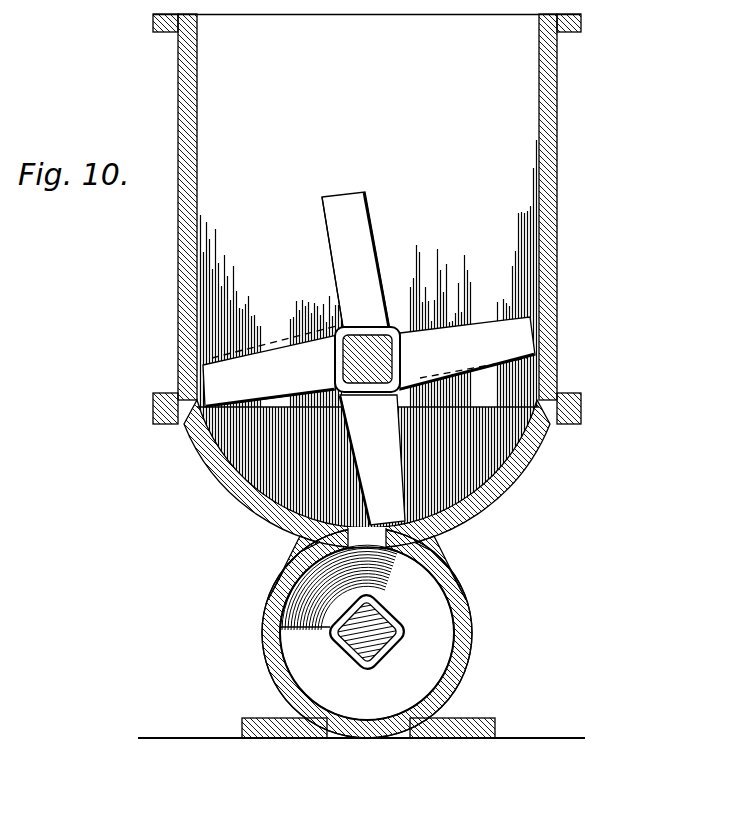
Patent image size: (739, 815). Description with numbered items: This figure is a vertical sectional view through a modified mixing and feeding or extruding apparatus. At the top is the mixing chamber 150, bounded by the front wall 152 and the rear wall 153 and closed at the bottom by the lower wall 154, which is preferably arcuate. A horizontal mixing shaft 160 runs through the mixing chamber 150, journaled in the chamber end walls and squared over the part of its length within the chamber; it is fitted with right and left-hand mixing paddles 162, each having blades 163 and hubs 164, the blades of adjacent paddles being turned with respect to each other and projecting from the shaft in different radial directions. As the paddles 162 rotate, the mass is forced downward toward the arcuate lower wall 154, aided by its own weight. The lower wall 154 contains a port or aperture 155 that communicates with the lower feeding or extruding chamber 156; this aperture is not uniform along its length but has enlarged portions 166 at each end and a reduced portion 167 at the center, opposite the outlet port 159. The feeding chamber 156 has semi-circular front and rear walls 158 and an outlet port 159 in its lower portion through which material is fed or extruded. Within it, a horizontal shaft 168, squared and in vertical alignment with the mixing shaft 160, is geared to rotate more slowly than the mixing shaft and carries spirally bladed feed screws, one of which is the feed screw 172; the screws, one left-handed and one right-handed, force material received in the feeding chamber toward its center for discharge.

The mixing chamber 150 is at (366, 219).
The front wall 152 is at (552, 195).
The rear wall 153 is at (186, 273).
The lower wall 154 is at (490, 497).
The port or aperture 155 is at (352, 540).
The feeding or extruding chamber 156 is at (470, 612).
The semi-circular front and rear walls 158 is at (473, 664).
The outlet port 159 is at (408, 722).
The horizontal mixing shaft 160 is at (362, 350).
The mixing paddles 162 is at (358, 252).
The blades 163 is at (332, 200).
The hubs 164 is at (400, 330).
The enlarged portions 166 is at (437, 544).
The reduced portion 167 is at (370, 548).
The horizontal shaft 168 is at (330, 648).
The feed screw 172 is at (410, 672).